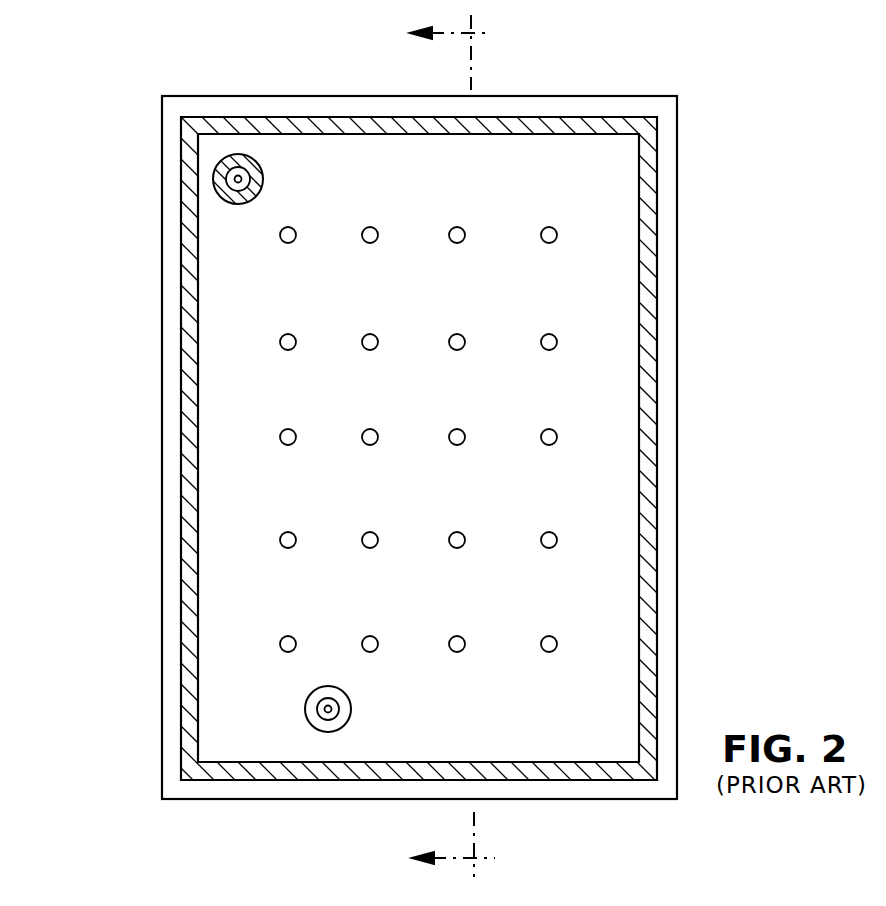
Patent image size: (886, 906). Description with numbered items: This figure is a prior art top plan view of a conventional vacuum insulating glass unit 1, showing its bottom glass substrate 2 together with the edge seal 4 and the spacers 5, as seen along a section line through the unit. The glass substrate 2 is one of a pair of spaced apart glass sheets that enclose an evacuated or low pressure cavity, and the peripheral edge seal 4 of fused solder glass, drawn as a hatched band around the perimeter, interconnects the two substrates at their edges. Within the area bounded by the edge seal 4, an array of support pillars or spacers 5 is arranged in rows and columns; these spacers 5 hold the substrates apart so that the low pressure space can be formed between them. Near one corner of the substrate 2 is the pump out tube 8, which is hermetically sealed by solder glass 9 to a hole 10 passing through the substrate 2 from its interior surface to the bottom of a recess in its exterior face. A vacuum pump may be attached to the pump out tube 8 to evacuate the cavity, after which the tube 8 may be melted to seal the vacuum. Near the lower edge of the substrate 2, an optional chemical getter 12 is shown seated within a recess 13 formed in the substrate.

The IG unit 1 is at (152, 671).
The glass substrate 2 is at (411, 106).
The edge seal 4 is at (316, 127).
The spacers 5 is at (558, 341).
The pump out tube 8 is at (234, 178).
The solder glass 9 is at (238, 205).
The hole 10 is at (226, 186).
The chemical getter 12 is at (326, 711).
The recess 13 is at (341, 708).